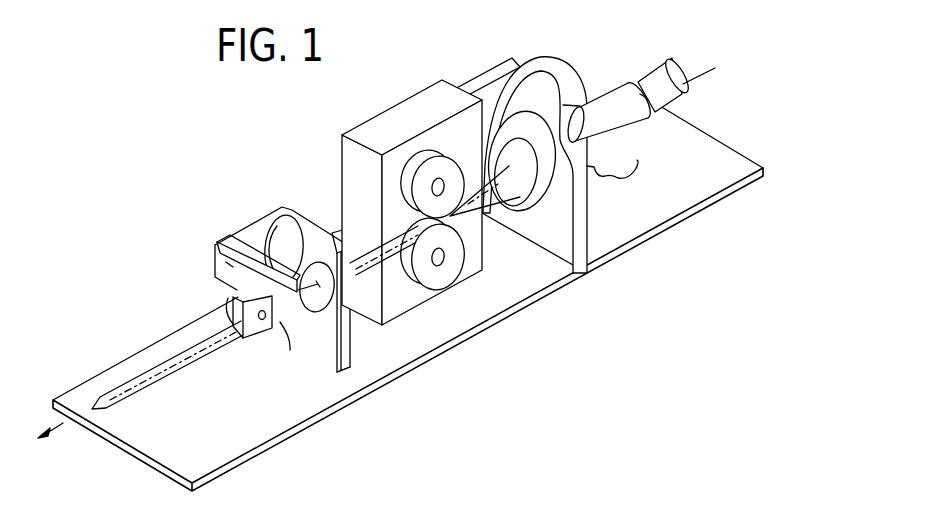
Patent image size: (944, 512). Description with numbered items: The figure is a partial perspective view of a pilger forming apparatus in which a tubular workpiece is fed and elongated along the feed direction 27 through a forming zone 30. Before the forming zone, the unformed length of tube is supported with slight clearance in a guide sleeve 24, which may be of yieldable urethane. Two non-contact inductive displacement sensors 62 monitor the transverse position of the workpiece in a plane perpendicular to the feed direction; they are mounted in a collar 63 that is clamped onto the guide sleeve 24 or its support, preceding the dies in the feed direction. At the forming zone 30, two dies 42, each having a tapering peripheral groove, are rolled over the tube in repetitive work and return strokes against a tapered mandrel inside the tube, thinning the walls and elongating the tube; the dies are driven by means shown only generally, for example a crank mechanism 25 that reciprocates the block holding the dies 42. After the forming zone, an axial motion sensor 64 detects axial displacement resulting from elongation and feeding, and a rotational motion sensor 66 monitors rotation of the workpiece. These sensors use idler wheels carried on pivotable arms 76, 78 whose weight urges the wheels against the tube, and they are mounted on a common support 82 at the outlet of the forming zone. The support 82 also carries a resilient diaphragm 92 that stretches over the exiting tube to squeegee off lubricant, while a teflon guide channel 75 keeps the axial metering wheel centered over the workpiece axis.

The guide sleeve 24 is at (606, 118).
The crank mechanism 25 is at (493, 63).
The feed/elongation direction 27 is at (68, 432).
The forming zone 30 is at (471, 288).
The dies 42 is at (425, 285).
The non-contact inductive displacement sensors 62 is at (555, 67).
The collar 63 is at (408, 292).
The axial motion sensor 64 is at (236, 306).
The rotational motion sensor 66 is at (292, 230).
The guide channel 75 is at (244, 346).
The pivotable arm 76 is at (224, 240).
The pivotable arm 78 is at (289, 343).
The common support 82 is at (334, 374).
The resilient diaphragm 92 is at (351, 348).